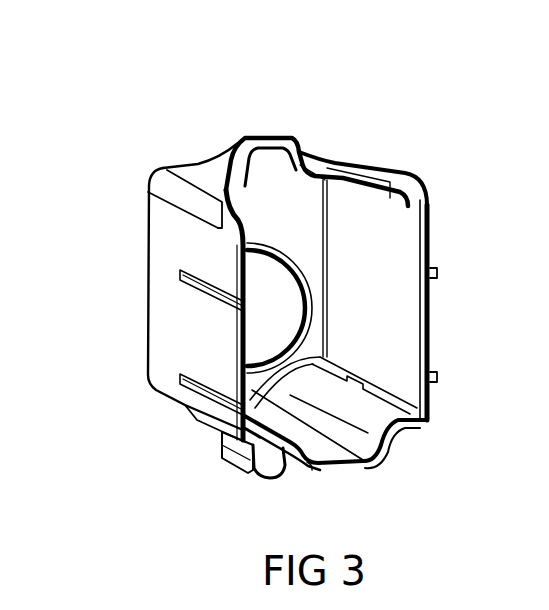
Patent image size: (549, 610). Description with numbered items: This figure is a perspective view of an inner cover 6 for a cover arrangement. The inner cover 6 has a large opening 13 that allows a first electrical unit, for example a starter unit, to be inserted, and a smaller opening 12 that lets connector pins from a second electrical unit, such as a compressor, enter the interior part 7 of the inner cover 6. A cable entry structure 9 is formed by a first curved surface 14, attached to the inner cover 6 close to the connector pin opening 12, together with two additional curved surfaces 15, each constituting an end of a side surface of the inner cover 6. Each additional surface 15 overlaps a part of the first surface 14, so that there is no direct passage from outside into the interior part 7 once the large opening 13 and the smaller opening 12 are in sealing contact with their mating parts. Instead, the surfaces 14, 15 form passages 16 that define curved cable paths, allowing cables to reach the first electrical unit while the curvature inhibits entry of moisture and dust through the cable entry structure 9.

The inner cover 6 is at (98, 193).
The interior part 7 is at (303, 207).
The cable entry structure 9 is at (370, 468).
The smaller opening 12 is at (263, 275).
The large opening 13 is at (343, 278).
The first curved surface 14 is at (345, 462).
The additional curved surfaces 15 is at (253, 480).
The passages 16 is at (420, 413).